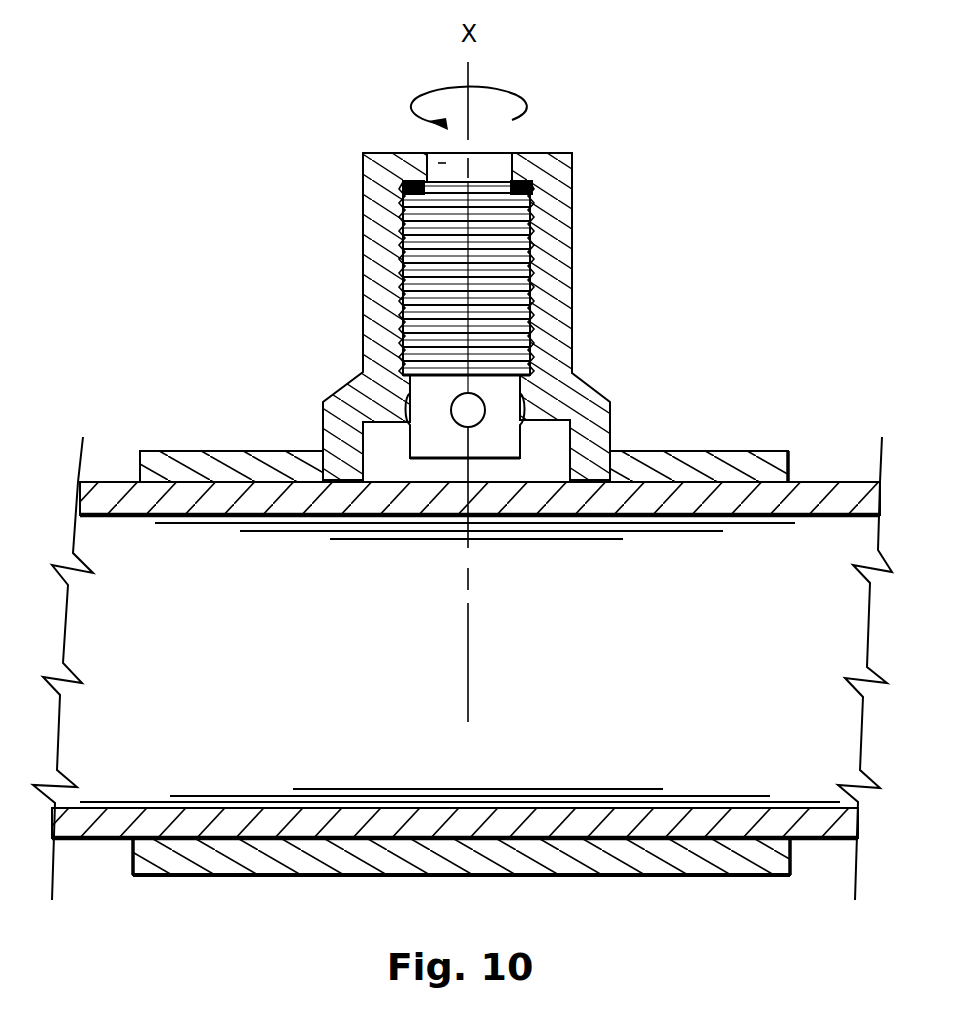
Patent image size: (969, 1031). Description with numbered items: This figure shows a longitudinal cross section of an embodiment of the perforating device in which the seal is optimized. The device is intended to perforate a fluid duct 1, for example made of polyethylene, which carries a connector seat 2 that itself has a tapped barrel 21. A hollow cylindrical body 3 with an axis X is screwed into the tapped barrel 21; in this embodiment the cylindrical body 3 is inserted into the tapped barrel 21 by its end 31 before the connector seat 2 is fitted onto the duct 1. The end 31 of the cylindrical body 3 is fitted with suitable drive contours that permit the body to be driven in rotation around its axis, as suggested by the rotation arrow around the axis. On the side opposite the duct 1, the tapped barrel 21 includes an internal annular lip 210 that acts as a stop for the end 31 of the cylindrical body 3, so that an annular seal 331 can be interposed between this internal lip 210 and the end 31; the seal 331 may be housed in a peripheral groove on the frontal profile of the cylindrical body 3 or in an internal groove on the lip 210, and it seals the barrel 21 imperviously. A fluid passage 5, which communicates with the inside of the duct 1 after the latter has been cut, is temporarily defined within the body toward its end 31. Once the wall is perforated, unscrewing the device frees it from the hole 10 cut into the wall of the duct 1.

The fluid duct 1 is at (833, 474).
The connector seat 2 is at (708, 442).
The tapped barrel 21 is at (414, 316).
The internal annular lip 210 is at (417, 160).
The hollow cylindrical body 3 is at (408, 233).
The end of cylindrical body 31 is at (482, 177).
The annular seal 331 is at (517, 167).
The fluid passage 5 is at (408, 409).
The hole 10 is at (472, 493).